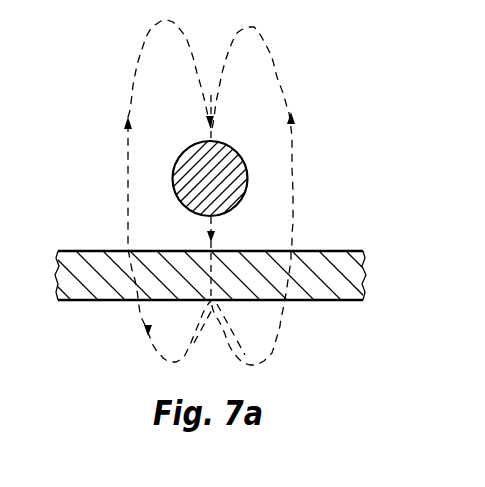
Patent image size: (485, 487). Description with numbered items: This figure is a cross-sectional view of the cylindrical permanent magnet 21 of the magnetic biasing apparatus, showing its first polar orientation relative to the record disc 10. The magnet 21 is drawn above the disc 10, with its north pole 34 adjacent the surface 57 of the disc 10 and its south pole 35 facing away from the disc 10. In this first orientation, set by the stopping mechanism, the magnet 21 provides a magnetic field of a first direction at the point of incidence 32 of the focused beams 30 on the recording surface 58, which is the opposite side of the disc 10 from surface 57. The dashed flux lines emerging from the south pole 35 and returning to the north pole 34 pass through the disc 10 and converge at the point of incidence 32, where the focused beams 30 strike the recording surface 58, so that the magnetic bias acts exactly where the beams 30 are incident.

The disc 10 is at (360, 273).
The cylindrical permanent magnet 21 is at (241, 164).
The focused beams 30 is at (230, 339).
The point of incidence 32 is at (212, 301).
The north pole 34 is at (212, 217).
The south pole 35 is at (213, 141).
The surface 57 is at (328, 251).
The recording surface 58 is at (350, 301).